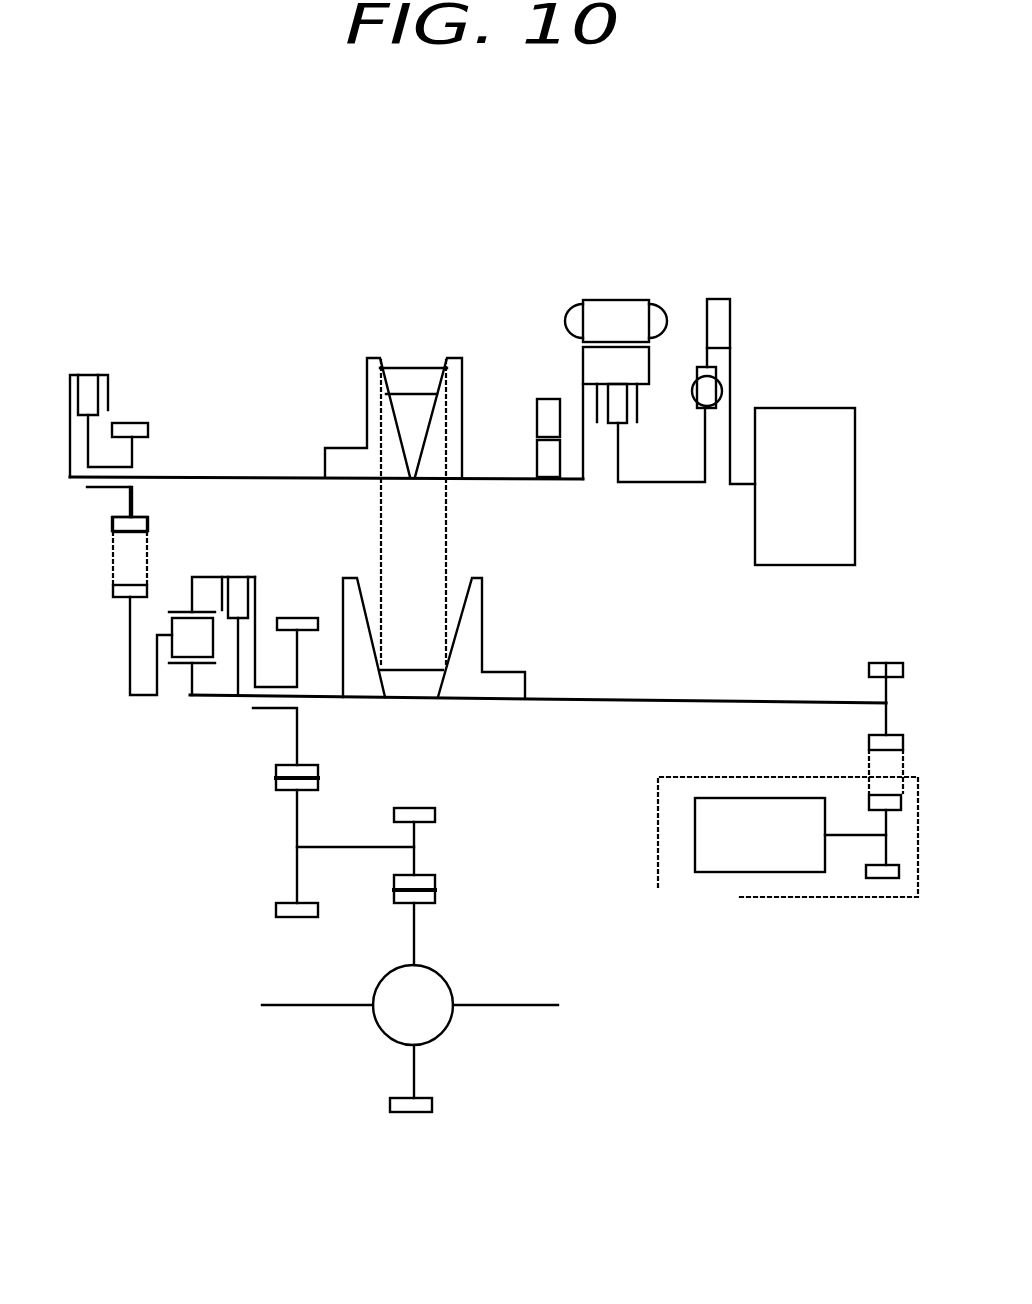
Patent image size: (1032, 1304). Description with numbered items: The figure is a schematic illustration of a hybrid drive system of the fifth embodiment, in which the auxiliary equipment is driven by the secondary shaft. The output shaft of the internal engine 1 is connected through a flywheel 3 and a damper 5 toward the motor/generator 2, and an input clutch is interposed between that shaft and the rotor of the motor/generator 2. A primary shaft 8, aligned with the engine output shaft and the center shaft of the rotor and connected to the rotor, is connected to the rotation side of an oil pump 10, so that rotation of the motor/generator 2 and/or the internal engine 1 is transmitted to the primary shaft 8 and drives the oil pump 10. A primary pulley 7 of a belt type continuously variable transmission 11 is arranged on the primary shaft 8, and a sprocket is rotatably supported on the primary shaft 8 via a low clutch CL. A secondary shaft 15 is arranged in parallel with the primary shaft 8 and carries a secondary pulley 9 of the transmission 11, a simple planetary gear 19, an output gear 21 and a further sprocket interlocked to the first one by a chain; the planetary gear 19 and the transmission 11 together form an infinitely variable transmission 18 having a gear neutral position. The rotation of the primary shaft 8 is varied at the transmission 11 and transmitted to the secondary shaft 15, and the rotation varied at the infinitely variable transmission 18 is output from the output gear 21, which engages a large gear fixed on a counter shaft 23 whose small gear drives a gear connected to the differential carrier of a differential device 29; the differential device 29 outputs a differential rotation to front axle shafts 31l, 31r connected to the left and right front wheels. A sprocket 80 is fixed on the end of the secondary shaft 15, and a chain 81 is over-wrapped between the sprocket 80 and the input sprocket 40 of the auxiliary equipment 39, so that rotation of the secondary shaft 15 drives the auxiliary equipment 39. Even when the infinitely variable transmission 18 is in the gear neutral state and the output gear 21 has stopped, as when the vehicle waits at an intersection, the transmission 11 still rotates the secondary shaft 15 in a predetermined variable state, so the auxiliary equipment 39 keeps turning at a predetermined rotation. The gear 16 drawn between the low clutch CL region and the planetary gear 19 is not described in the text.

The internal engine 1 is at (835, 408).
The motor/generator 2 is at (641, 288).
The flywheel 3 is at (722, 320).
The damper 5 is at (720, 388).
The primary pulley 7 is at (357, 392).
The primary shaft 8 is at (200, 480).
The secondary pulley 9 is at (493, 618).
The oil pump 10 is at (537, 385).
The belt type continuously variable transmission 11 is at (417, 342).
The secondary shaft 15 is at (745, 700).
The chain 16 is at (97, 615).
The infinitely variable transmission 18 is at (228, 330).
The simple planetary gear 19 is at (177, 703).
The output gear 21 is at (296, 618).
The counter shaft 23 is at (345, 845).
The differential device 29 is at (443, 962).
The front axle shaft 31l is at (308, 1006).
The front axle shaft 31r is at (508, 1006).
The auxiliary equipment 39 is at (721, 765).
The input sprocket 40 is at (878, 880).
The sprocket 80 is at (886, 660).
The chain 81 is at (868, 762).
The low clutch CL is at (90, 372).